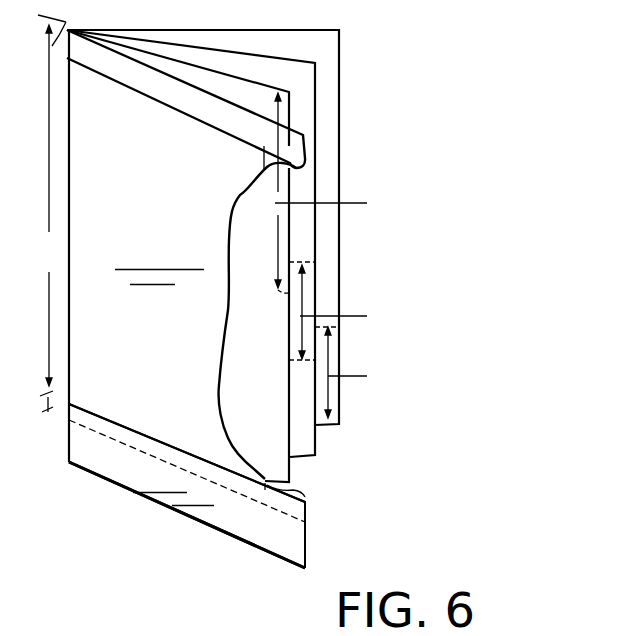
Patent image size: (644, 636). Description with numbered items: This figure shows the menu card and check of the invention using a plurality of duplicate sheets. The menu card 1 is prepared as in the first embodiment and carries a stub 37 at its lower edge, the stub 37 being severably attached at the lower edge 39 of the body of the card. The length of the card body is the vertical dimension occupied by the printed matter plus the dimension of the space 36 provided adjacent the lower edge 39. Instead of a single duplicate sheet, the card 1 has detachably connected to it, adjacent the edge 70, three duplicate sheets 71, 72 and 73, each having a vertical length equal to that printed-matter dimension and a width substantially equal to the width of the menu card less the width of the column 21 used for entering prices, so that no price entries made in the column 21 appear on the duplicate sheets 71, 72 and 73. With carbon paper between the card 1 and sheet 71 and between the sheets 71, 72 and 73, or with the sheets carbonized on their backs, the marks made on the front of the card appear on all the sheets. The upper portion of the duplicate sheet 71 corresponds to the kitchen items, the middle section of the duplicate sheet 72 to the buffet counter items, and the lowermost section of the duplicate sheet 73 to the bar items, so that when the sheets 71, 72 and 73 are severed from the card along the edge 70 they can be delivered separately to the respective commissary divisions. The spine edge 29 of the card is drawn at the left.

The menu card 1 is at (313, 509).
The column 21 is at (270, 163).
The spine fold edge 29 is at (68, 126).
The space 36 is at (77, 415).
The stub 37 is at (255, 537).
The lower edge 39 is at (292, 520).
The edge 70 is at (73, 200).
The duplicate sheet 71 is at (292, 472).
The duplicate sheet 72 is at (312, 443).
The duplicate sheet 73 is at (340, 413).